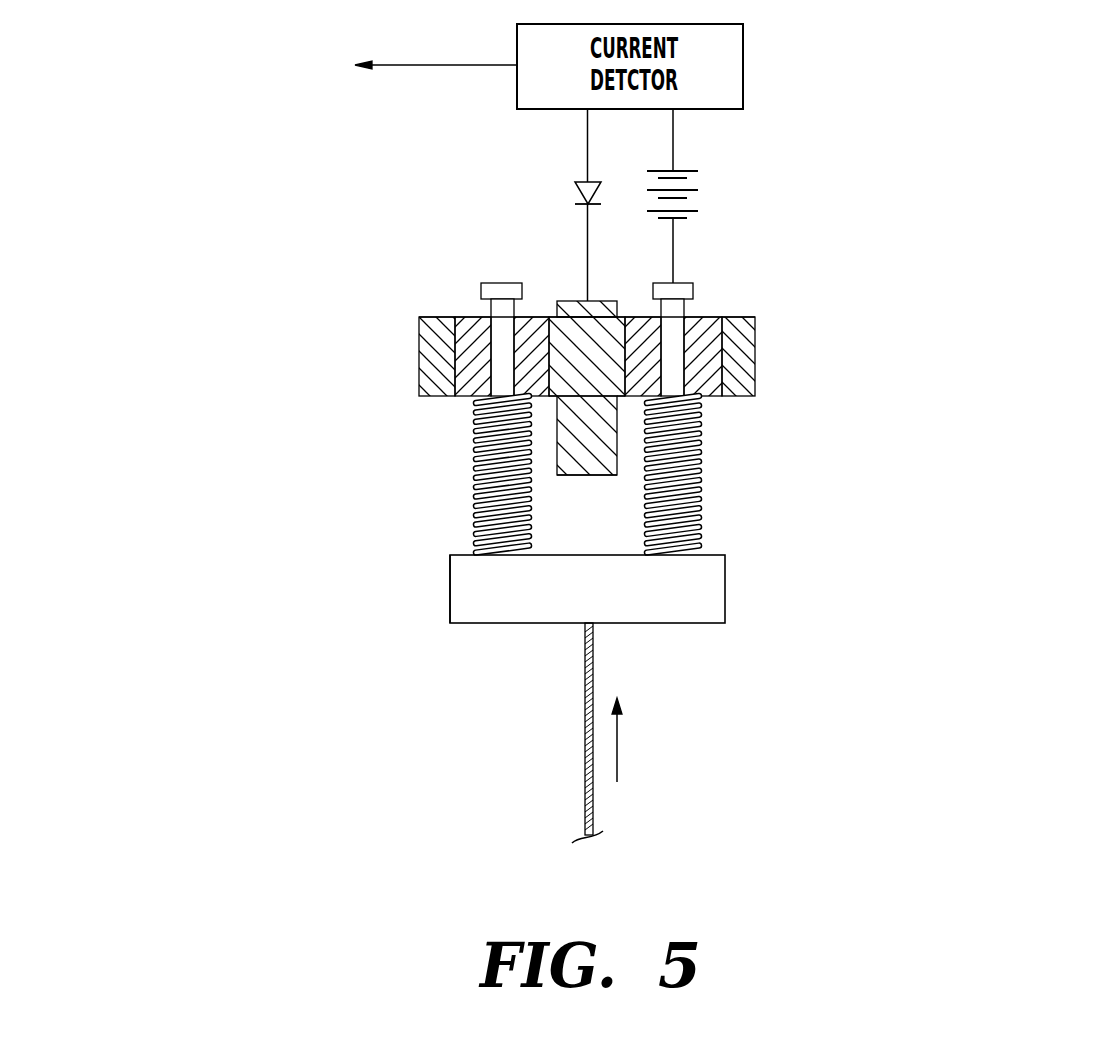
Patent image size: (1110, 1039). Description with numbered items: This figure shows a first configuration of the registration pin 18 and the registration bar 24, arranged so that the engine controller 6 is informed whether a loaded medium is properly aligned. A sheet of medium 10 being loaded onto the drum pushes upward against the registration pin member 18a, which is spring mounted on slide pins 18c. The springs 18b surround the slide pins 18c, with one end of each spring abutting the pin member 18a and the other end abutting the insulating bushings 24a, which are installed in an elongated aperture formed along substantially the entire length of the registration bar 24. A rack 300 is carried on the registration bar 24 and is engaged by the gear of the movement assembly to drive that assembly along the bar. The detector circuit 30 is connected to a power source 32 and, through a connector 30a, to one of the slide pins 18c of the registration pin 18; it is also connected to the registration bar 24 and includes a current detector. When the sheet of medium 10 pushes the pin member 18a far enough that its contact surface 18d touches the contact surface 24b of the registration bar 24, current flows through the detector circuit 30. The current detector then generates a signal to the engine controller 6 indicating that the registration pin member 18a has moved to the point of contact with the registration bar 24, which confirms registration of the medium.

The engine controller 6 is at (298, 62).
The detector circuit 30 is at (673, 132).
The power source 32 is at (690, 186).
The connector 30a is at (680, 287).
The slide pins 18c is at (494, 307).
The rack 300 is at (572, 310).
The insulating bushings 24a is at (470, 363).
The registration bar 24 is at (585, 440).
The contact surface of registration bar 24b is at (593, 477).
The springs 18b is at (478, 453).
The contact surface of pin member 18d is at (588, 553).
The registration pin 18 is at (710, 592).
The registration pin member 18a is at (483, 563).
The sheet of medium 10 is at (583, 720).